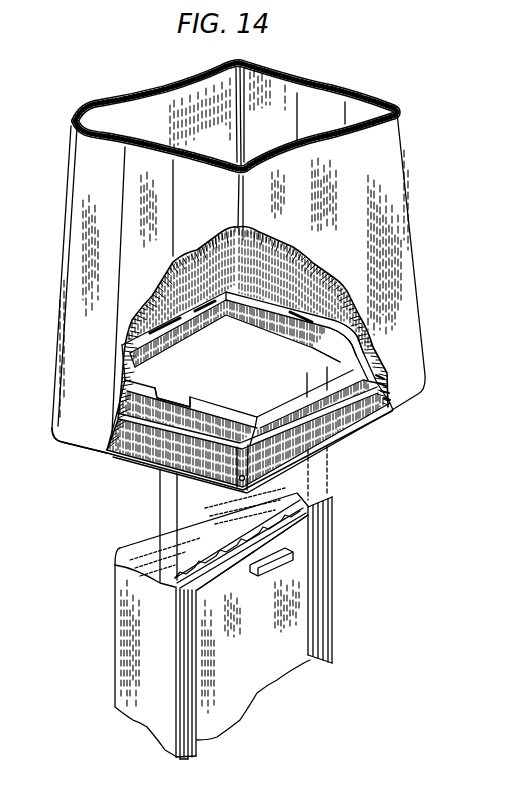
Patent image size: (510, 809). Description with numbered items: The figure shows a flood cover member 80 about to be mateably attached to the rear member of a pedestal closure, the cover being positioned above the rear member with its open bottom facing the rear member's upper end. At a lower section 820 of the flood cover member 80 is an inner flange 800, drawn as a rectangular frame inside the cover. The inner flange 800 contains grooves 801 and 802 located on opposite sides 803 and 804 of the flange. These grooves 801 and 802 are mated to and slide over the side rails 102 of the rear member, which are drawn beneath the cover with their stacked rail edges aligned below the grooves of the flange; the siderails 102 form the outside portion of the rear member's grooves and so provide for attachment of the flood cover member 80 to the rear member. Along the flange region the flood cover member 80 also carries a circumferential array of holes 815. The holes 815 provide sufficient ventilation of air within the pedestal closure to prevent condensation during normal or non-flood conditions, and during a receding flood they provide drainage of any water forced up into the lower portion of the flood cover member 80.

The flood cover member 80 is at (73, 237).
The lower section 820 is at (124, 334).
The side 804 is at (92, 430).
The inner flange 800 is at (170, 356).
The groove 801 is at (317, 332).
The groove 802 is at (183, 400).
The side 803 is at (260, 280).
The holes 815 is at (388, 400).
The siderails 102 is at (330, 550).